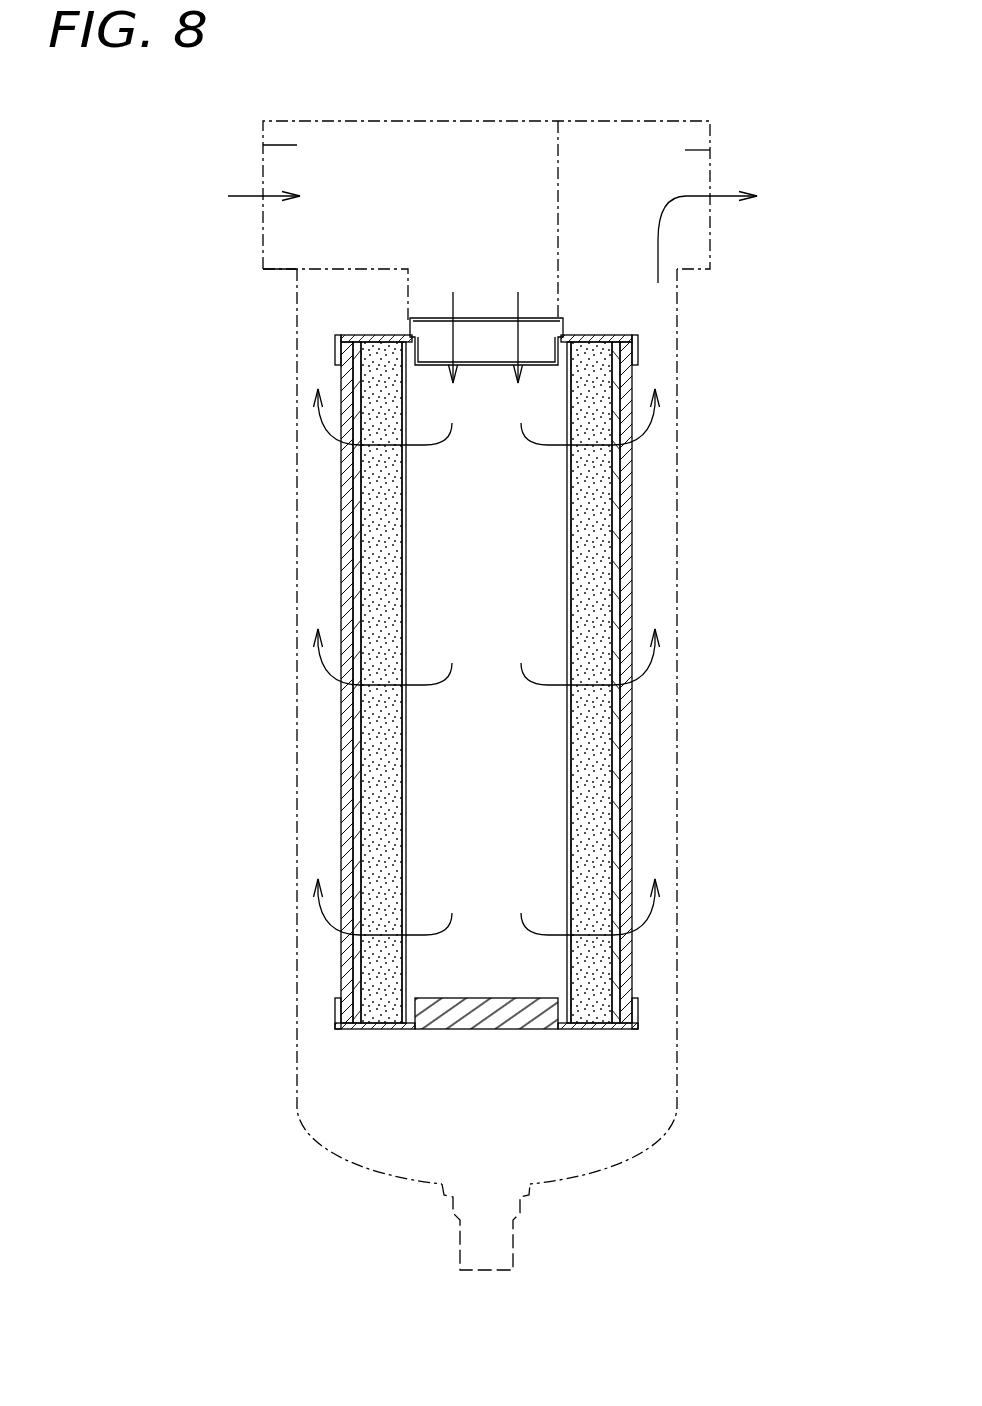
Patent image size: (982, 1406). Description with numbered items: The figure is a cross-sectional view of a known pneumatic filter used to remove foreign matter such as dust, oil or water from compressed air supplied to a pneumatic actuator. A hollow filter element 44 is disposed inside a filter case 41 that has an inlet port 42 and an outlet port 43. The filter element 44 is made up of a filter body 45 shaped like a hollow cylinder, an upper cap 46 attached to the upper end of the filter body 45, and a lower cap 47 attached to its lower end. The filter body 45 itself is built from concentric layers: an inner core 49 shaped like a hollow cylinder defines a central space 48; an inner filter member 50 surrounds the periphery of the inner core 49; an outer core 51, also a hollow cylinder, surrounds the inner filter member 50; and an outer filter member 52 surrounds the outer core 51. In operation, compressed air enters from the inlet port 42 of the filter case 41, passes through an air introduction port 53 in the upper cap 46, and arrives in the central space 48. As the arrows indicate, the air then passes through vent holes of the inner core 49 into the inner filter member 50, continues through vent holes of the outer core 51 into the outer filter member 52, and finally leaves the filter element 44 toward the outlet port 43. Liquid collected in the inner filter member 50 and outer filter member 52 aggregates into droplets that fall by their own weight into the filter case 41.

The filter case 41 is at (455, 121).
The inlet port 42 is at (263, 145).
The outlet port 43 is at (710, 150).
The filter element 44 is at (660, 537).
The filter body 45 is at (340, 558).
The upper cap 46 is at (610, 337).
The lower cap 47 is at (595, 1029).
The central space 48 is at (493, 552).
The inner core 49 is at (405, 748).
The inner filter member 50 is at (380, 820).
The outer core 51 is at (610, 763).
The outer filter member 52 is at (625, 823).
The air introduction port 53 is at (435, 343).